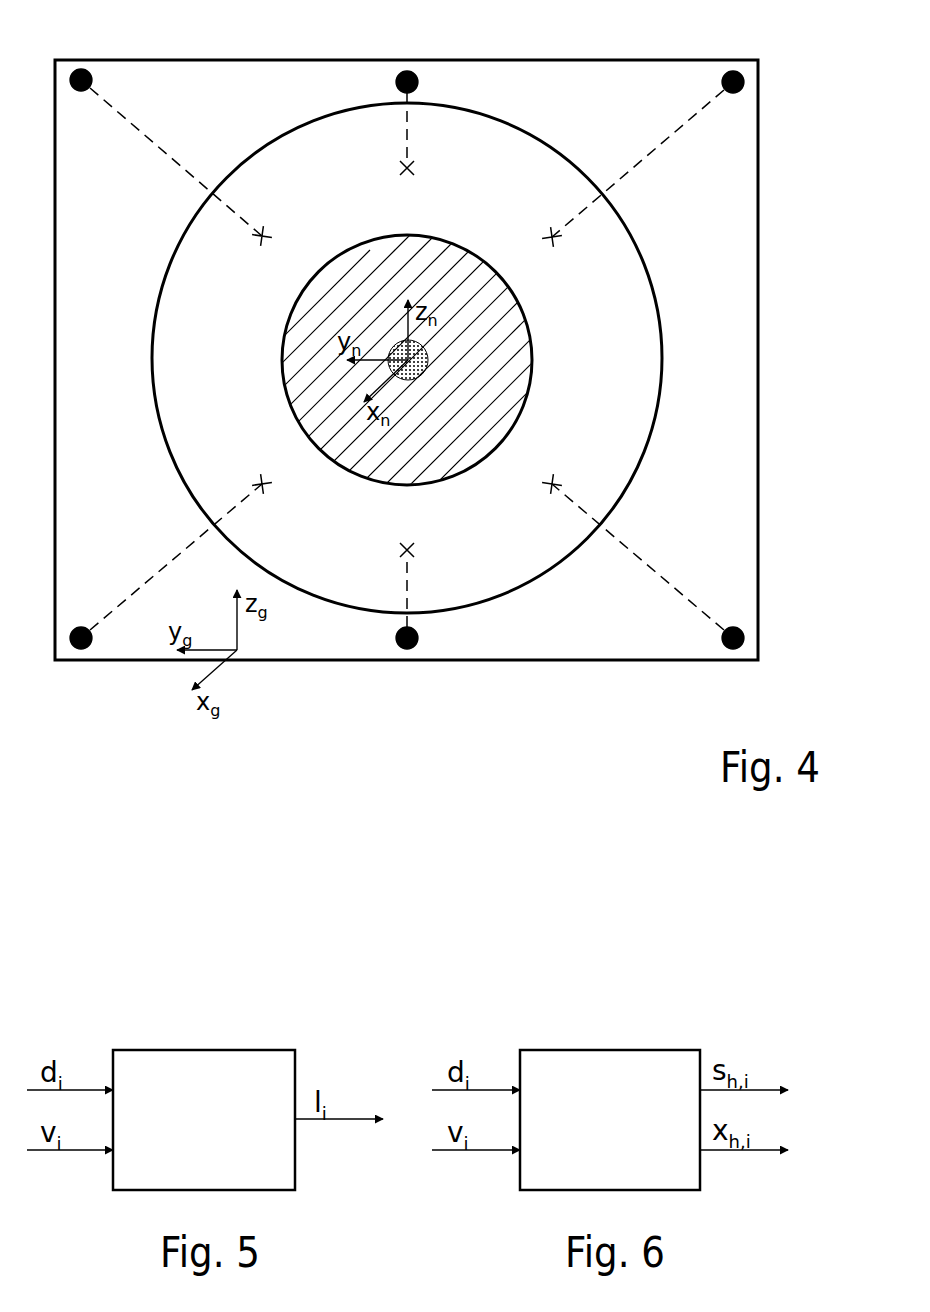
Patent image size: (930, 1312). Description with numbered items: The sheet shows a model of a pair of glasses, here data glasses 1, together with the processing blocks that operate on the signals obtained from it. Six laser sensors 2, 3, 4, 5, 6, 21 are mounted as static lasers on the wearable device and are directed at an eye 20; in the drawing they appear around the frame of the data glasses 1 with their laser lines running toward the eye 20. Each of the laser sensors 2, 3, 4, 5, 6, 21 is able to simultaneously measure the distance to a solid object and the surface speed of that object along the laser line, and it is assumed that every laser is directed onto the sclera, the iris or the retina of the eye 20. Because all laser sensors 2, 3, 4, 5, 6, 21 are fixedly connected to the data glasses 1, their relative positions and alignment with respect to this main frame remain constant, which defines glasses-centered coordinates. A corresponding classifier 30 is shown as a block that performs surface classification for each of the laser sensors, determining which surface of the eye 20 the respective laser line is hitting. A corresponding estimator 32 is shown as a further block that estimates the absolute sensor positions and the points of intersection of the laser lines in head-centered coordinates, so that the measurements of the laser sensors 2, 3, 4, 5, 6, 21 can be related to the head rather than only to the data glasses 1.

In FIG. 4, the data glasses 1 is at (758, 358).
In FIG. 4, the laser sensor 2 is at (81, 72).
In FIG. 4, the laser sensor 3 is at (407, 72).
In FIG. 4, the laser sensor 4 is at (734, 72).
In FIG. 4, the laser sensor 5 is at (734, 650).
In FIG. 4, the laser sensor 6 is at (407, 650).
In FIG. 4, the laser sensor 21 is at (82, 650).
In FIG. 4, the eye 20 is at (657, 461).
In FIG. 5, the classifier 30 is at (189, 1134).
In FIG. 6, the estimator 32 is at (595, 1134).